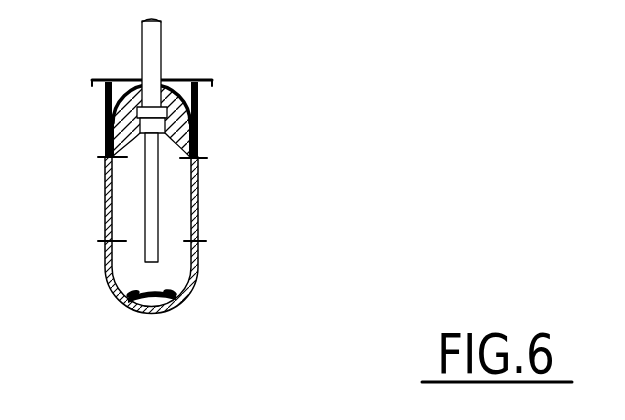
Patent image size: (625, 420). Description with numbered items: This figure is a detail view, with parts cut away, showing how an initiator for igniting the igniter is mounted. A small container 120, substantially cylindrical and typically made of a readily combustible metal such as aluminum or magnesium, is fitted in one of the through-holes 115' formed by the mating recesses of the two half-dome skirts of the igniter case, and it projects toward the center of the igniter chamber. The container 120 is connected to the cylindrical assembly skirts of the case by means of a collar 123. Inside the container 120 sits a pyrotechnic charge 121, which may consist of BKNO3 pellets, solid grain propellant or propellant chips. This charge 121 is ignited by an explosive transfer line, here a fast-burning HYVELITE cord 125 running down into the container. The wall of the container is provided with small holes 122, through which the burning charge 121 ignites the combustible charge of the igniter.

The hole 115' is at (218, 139).
The small container 120 is at (122, 114).
The pyrotechnic charge 121 is at (142, 292).
The small holes 122 is at (106, 158).
The collar 123 is at (203, 84).
The HYVELITE cord 125 is at (148, 47).